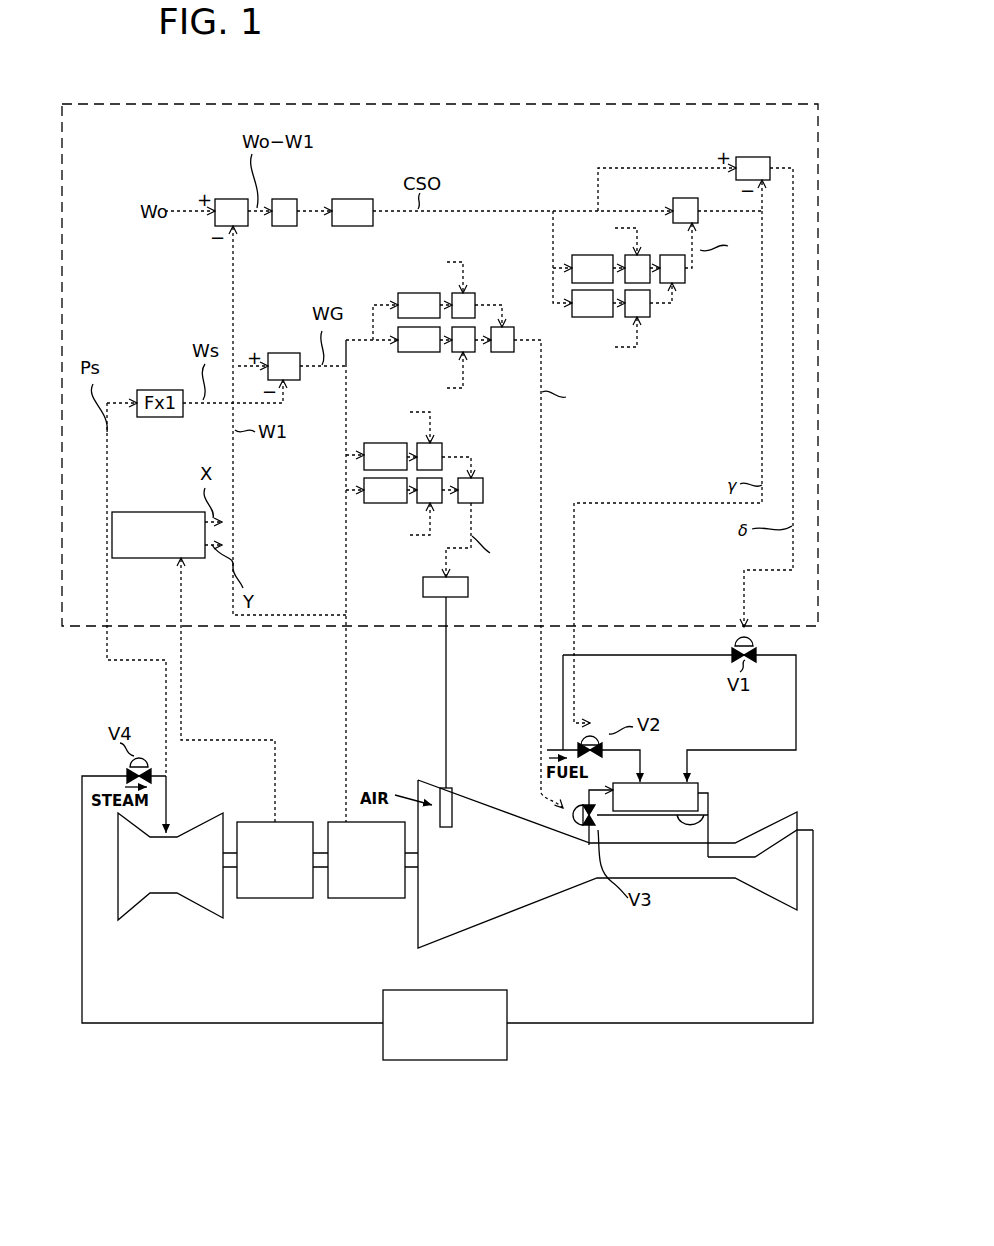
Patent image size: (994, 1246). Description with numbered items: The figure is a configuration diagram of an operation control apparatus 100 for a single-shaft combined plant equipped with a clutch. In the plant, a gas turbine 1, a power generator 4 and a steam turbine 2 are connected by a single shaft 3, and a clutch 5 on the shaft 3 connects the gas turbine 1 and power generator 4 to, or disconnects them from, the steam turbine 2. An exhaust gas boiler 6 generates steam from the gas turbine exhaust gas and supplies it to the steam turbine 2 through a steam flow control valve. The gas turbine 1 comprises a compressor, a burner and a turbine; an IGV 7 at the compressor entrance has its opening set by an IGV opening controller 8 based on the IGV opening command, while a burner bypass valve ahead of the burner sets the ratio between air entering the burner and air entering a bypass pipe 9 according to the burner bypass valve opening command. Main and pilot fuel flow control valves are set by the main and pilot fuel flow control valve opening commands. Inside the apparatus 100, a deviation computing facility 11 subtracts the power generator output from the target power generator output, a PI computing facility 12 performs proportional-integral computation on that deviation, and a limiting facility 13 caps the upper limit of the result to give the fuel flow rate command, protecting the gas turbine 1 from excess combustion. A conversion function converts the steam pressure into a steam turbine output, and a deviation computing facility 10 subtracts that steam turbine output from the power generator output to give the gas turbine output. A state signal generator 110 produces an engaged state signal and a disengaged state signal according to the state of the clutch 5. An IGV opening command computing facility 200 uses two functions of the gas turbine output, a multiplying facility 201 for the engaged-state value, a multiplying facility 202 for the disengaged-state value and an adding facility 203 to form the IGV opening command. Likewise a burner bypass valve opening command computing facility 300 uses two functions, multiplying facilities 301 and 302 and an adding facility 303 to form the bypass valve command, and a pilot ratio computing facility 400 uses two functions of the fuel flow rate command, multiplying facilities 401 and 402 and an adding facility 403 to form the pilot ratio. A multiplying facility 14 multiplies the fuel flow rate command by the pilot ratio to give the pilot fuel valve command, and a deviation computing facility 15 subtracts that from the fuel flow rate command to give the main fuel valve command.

The gas turbine 1 is at (570, 901).
The steam turbine 2 is at (162, 896).
The shaft 3 is at (320, 870).
The power generator 4 is at (383, 900).
The clutch 5 is at (262, 900).
The exhaust gas boiler 6 is at (458, 990).
The IGV 7 is at (453, 800).
The IGV opening controller 8 is at (423, 583).
The bypass pipe 9 is at (710, 815).
The deviation computing facility 10 is at (301, 383).
The deviation computing facility 11 is at (233, 199).
The PI computing facility 12 is at (288, 199).
The limiting facility 13 is at (356, 199).
The multiplying facility 14 is at (673, 201).
The deviation computing facility 15 is at (753, 157).
The operation control apparatus 100 is at (562, 104).
The state signal generator 110 is at (147, 512).
The IGV opening command computing facility 200 is at (347, 505).
The multiplying facility 201 is at (445, 450).
The multiplying facility 202 is at (443, 505).
The adding facility 203 is at (485, 483).
The burner bypass valve opening command computing facility 300 is at (397, 278).
The multiplying facility 301 is at (477, 300).
The multiplying facility 302 is at (466, 353).
The adding facility 303 is at (506, 353).
The pilot ratio computing facility 400 is at (542, 250).
The multiplying facility 401 is at (643, 255).
The multiplying facility 402 is at (650, 318).
The adding facility 403 is at (680, 285).